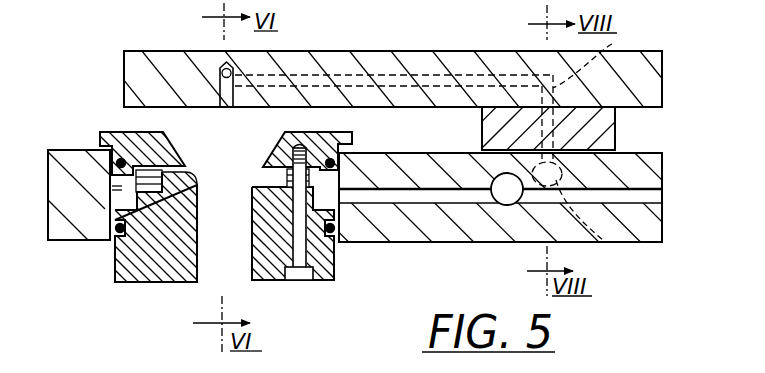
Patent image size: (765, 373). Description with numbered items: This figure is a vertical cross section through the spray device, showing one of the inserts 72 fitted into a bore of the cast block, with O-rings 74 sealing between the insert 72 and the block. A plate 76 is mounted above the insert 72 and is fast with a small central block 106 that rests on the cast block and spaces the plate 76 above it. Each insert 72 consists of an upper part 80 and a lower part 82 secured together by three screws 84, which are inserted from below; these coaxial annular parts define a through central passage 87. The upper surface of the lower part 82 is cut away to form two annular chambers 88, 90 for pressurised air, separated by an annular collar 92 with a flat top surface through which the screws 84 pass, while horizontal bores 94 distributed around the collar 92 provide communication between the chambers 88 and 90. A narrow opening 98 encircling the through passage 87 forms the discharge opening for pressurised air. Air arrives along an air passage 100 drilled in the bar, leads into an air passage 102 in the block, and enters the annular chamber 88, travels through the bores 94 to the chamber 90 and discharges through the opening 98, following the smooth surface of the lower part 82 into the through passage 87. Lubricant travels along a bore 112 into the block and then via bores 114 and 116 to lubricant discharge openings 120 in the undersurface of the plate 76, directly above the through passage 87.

The insert 72 is at (134, 262).
The O-ring 74 is at (334, 163).
The plate 76 is at (332, 60).
The upper part 80 is at (115, 137).
The lower part 82 is at (153, 262).
The screw 84 is at (298, 281).
The through central passage 87 is at (240, 229).
The annular chamber 88 is at (110, 188).
The annular chamber 90 is at (167, 182).
The annular collar 92 is at (155, 167).
The horizontal bore 94 is at (140, 186).
The narrow opening 98 is at (280, 182).
The air passage 100 is at (523, 186).
The air passage 102 is at (464, 197).
The central block 106 is at (593, 142).
The bore 112 is at (600, 240).
The bore 114 is at (612, 44).
The bore 116 is at (381, 75).
The lubricant discharge opening 120 is at (218, 84).